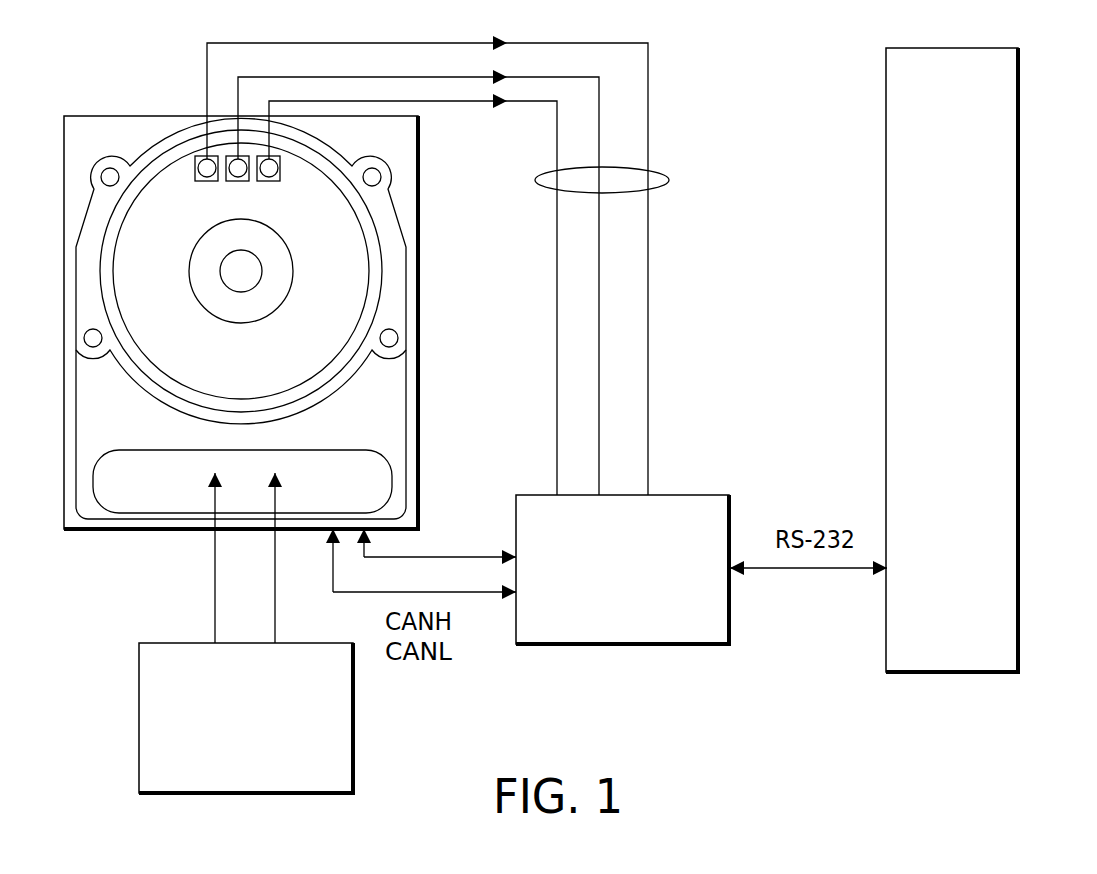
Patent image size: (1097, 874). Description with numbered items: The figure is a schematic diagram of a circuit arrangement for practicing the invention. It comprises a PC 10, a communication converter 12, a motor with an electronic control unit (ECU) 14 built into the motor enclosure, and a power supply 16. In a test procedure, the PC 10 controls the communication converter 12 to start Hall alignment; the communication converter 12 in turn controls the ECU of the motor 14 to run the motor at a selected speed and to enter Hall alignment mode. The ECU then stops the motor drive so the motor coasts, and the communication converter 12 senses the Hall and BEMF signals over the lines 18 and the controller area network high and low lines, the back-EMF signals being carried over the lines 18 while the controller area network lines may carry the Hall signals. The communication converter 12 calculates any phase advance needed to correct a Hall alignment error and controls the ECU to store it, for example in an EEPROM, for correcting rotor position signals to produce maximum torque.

The PC 10 is at (1020, 182).
The communication converter 12 is at (702, 495).
The motor with electronic control unit 14 is at (421, 360).
The power supply 16 is at (148, 643).
The lines 18 is at (669, 176).